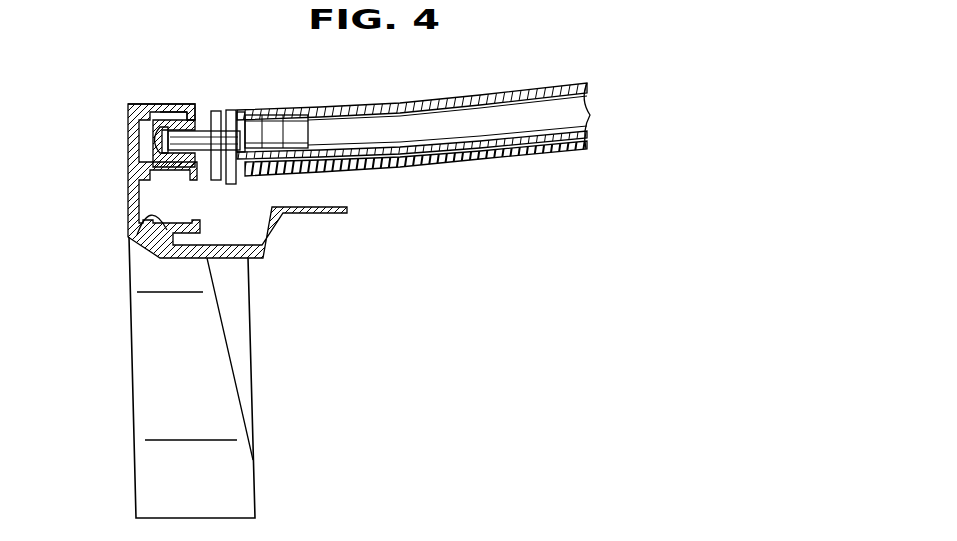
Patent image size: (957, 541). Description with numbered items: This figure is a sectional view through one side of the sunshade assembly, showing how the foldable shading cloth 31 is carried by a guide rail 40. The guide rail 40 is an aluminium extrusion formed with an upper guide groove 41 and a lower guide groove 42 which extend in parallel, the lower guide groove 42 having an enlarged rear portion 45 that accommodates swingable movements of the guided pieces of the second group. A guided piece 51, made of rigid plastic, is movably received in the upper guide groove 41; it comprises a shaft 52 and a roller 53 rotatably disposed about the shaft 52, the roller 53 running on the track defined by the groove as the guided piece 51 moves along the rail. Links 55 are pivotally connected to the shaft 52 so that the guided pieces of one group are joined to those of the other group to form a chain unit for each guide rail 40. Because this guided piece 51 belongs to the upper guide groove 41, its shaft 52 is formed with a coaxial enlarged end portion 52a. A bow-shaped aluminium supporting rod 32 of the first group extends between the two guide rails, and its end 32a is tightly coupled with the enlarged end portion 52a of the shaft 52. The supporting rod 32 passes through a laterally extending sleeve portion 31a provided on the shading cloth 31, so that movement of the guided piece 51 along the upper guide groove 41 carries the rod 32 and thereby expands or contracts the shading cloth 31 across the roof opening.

The guide rail 40 is at (124, 122).
The upper guide groove 41 is at (142, 108).
The lower guide groove 42 is at (130, 220).
The enlarged rear portion 45 is at (200, 398).
The guided piece 51 is at (146, 145).
The shaft 52 is at (172, 108).
The roller 53 is at (158, 108).
The link 55 is at (231, 110).
The enlarged end portion 52a is at (272, 112).
The end of supporting rod 32a is at (250, 112).
The sleeve portion 31a is at (370, 104).
The supporting rod 32 is at (378, 160).
The shading cloth 31 is at (414, 168).